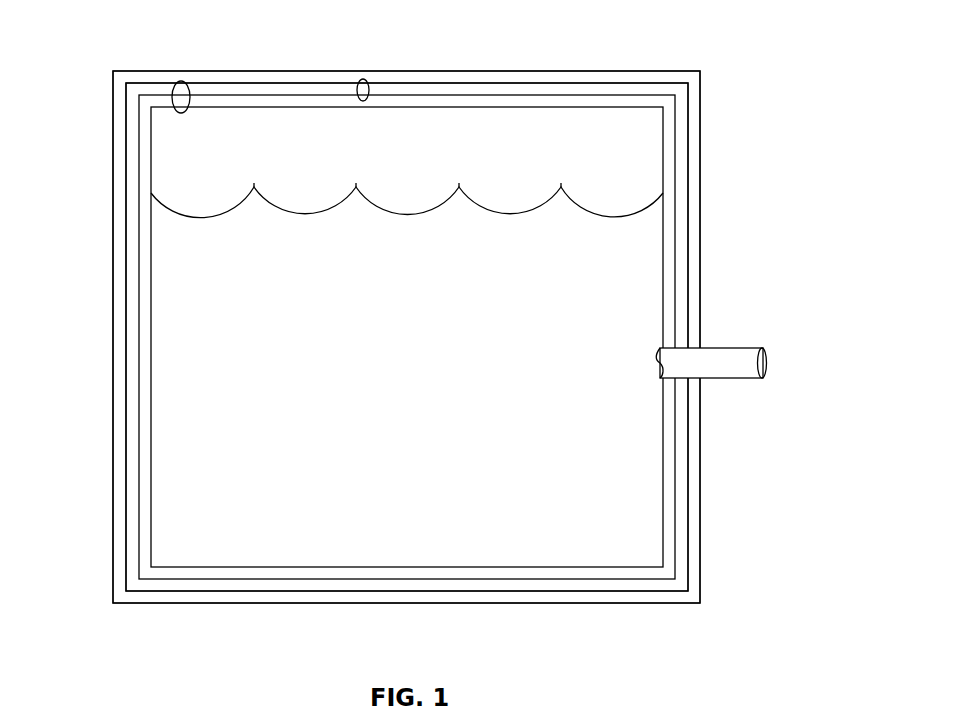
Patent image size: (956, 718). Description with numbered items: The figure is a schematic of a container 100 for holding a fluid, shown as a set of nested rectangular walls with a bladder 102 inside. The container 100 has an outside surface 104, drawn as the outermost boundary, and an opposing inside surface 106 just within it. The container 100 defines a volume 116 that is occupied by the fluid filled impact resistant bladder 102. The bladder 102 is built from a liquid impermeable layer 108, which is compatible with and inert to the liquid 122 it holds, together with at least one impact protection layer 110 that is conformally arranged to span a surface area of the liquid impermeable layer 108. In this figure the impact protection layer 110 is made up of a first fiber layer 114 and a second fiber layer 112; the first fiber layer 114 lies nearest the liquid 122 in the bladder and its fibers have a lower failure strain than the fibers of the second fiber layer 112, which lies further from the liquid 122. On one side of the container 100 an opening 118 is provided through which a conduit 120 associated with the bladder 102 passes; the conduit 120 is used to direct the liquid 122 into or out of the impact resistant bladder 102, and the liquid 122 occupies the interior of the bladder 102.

The container 100 is at (115, 366).
The bladder 102 is at (178, 81).
The outside surface 104 is at (159, 603).
The inside surface 106 is at (121, 534).
The liquid impermeable layer 108 is at (424, 108).
The impact protection layer 110 is at (363, 79).
The second fiber layer 112 is at (607, 83).
The first fiber layer 114 is at (677, 166).
The volume 116 is at (187, 155).
The opening 118 is at (700, 346).
The conduit 120 is at (735, 369).
The liquid 122 is at (517, 481).